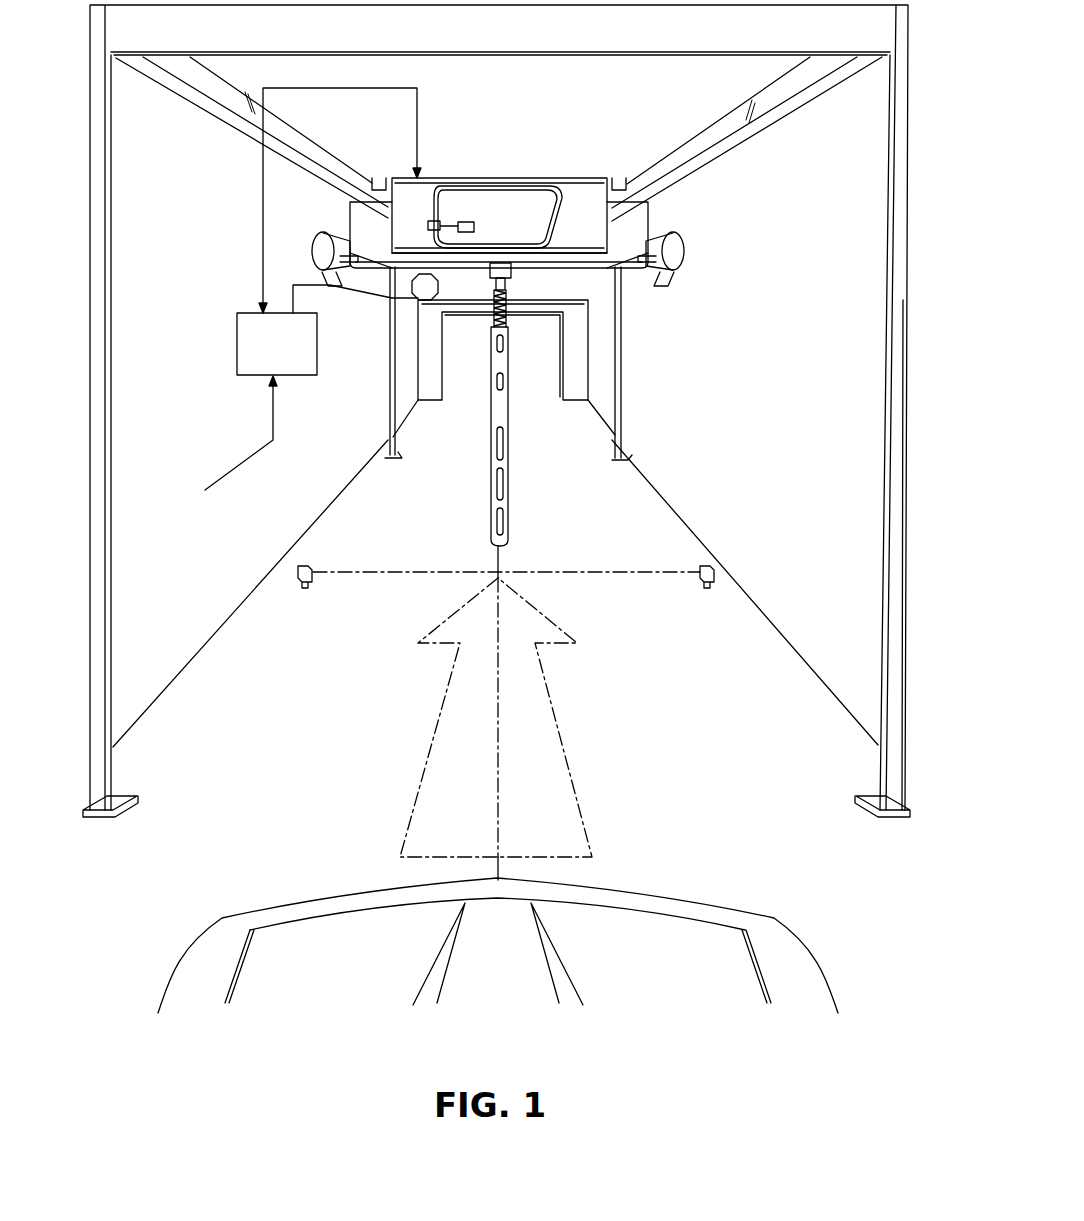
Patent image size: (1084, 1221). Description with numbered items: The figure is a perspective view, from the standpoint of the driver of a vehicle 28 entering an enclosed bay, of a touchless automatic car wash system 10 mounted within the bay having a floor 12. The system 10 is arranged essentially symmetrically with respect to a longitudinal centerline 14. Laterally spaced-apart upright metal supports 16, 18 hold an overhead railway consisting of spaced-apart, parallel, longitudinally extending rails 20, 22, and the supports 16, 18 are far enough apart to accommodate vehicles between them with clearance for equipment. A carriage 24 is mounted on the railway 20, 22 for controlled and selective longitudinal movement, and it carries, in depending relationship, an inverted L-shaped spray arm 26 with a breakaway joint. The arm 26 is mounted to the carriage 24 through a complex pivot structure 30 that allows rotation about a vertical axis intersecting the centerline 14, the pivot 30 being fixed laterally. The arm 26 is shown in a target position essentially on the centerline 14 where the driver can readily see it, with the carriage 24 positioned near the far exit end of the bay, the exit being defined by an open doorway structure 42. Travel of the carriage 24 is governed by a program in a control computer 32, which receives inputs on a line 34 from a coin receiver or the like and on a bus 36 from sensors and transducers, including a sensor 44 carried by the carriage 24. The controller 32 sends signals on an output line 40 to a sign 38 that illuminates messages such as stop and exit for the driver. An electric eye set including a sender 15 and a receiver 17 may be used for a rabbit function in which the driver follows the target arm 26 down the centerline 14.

The car wash system 10 is at (498, 162).
The floor 12 is at (432, 436).
The longitudinal centerline 14 is at (496, 548).
The sender 15 is at (300, 568).
The upright metal support 16 is at (385, 412).
The receiver 17 is at (710, 570).
The upright metal support 18 is at (622, 375).
The rail 20 is at (313, 160).
The rail 22 is at (690, 168).
The carriage 24 is at (557, 178).
The spray arm 26 is at (512, 470).
The vehicle 28 is at (325, 895).
The pivot structure 30 is at (511, 280).
The control computer 32 is at (250, 377).
The line 34 is at (274, 412).
The bus 36 is at (262, 248).
The sign 38 is at (440, 292).
The output line 40 is at (357, 298).
The open doorway structure 42 is at (448, 372).
The sensor 44 is at (466, 222).